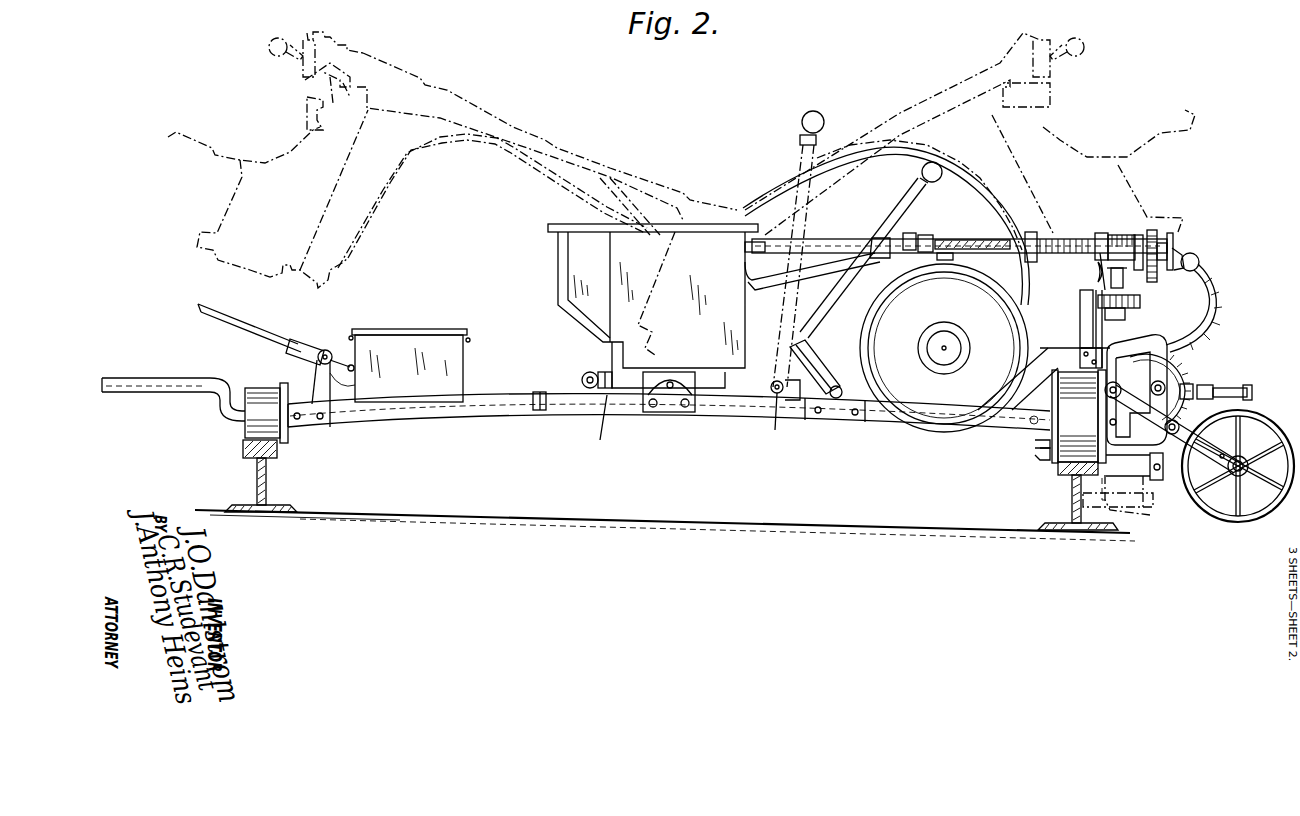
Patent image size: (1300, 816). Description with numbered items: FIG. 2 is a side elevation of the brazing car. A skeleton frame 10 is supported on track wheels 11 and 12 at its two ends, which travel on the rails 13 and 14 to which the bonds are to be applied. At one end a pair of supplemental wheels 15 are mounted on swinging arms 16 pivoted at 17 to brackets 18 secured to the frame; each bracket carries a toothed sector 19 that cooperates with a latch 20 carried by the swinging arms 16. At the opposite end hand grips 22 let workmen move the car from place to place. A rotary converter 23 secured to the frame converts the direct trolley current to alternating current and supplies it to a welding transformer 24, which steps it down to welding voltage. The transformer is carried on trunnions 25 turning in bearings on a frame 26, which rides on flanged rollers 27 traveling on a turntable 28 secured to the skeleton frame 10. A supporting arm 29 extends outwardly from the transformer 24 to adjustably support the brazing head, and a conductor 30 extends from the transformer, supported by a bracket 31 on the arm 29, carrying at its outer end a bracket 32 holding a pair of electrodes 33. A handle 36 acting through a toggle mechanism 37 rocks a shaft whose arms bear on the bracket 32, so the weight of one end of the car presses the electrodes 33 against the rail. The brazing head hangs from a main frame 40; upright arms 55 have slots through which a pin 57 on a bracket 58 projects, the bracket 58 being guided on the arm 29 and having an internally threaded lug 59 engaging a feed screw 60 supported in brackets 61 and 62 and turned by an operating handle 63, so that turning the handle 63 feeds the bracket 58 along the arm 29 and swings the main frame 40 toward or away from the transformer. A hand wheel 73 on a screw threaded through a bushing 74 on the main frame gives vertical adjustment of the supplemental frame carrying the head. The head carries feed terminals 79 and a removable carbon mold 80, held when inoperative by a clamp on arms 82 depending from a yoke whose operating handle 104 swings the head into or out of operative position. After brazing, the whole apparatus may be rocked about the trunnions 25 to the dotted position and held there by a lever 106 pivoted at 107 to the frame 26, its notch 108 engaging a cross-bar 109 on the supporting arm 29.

The skeleton frame 10 is at (450, 418).
The track wheel 11 is at (245, 432).
The track wheel 12 is at (1079, 416).
The rail 13 is at (268, 484).
The rail 14 is at (1072, 510).
The supplemental wheels 15 is at (1228, 520).
The swinging arms 16 is at (1120, 388).
The pivot 17 is at (1160, 355).
The brackets 18 is at (1145, 345).
The toothed sector 19 is at (1192, 388).
The latch 20 is at (1189, 417).
The hand grips 22 is at (172, 373).
The rotary converter 23 is at (944, 348).
The welding transformer 24 is at (653, 306).
The trunnions 25 is at (670, 390).
The frame 26 is at (612, 392).
The flanged rollers 27 is at (584, 375).
The turntable 28 is at (538, 392).
The supporting arm 29 is at (493, 118).
The conductor 30 is at (958, 172).
The bracket 31 is at (955, 245).
The bracket 32 is at (1033, 444).
The electrodes 33 is at (1040, 456).
The handle 36 is at (252, 325).
The toggle mechanism 37 is at (355, 385).
The main frame 40 is at (1080, 327).
The upright arms 55 is at (1098, 278).
The pin 57 is at (1098, 265).
The bracket 58 is at (1150, 237).
The internally screw threaded lug 59 is at (1117, 235).
The feed screw 60 is at (1098, 232).
The bracket 61 is at (1030, 232).
The bracket 62 is at (1170, 237).
The operating handle 63 is at (268, 49).
The hand wheel 73 is at (1142, 302).
The bushing 74 is at (1129, 281).
The feed terminals 79 is at (968, 243).
The carbon mold 80 is at (1112, 515).
The arms 82 is at (1160, 482).
The operating handle 104 is at (200, 158).
The lever 106 is at (875, 238).
The pivot 107 is at (781, 395).
The notch 108 is at (900, 215).
The cross-bar 109 is at (880, 245).